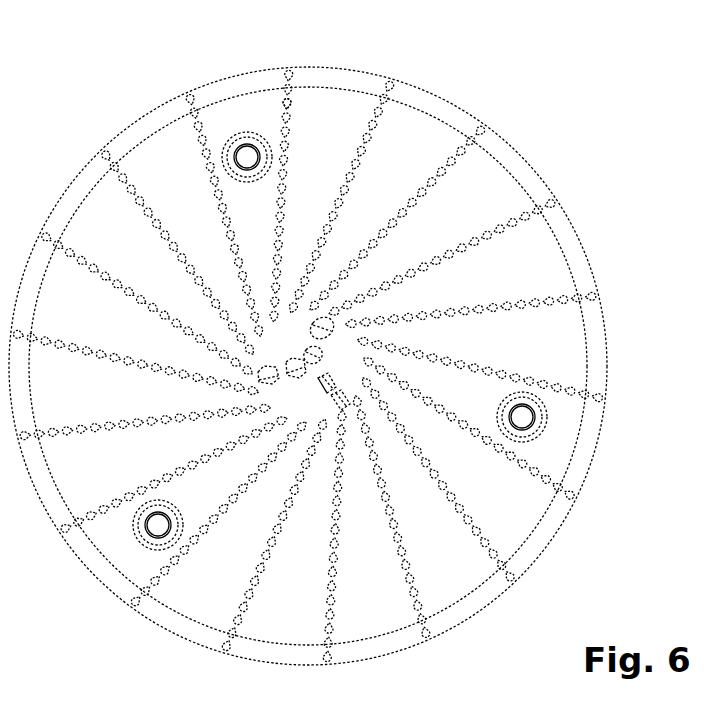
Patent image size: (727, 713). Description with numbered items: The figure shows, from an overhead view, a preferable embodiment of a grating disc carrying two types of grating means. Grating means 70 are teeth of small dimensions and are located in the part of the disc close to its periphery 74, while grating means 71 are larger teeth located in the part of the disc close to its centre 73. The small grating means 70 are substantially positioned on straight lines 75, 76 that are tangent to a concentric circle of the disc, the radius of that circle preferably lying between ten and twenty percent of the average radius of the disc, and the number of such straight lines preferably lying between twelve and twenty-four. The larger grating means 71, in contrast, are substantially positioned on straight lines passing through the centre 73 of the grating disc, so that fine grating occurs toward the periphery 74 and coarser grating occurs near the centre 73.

The grating means 70 is at (537, 302).
The grating means 71 is at (317, 330).
The centre 73 is at (310, 366).
The periphery 74 is at (420, 87).
The straight line 75 is at (294, 104).
The straight line 76 is at (205, 137).